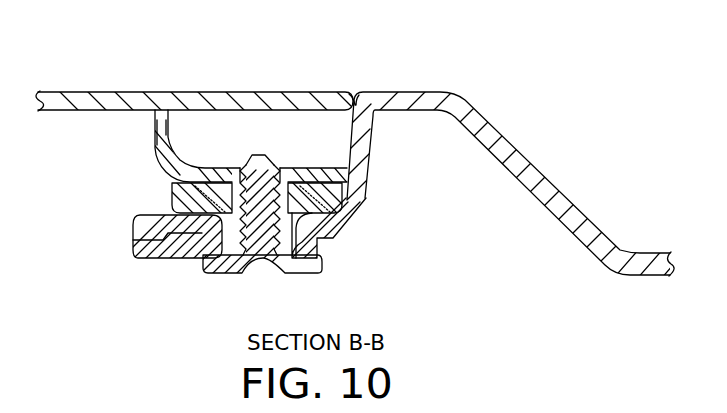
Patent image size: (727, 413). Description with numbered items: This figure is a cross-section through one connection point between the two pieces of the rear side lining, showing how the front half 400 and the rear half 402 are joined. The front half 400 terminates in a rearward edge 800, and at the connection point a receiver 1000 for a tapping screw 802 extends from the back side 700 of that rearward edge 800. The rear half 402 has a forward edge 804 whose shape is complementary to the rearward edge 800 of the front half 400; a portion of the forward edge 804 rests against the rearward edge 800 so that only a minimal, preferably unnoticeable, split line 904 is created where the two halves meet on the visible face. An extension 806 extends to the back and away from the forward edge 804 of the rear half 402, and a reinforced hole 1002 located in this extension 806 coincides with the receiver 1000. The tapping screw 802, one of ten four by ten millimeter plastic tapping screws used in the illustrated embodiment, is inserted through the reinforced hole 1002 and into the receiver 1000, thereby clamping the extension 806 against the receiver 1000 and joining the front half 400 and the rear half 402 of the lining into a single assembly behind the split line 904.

The front half 400 is at (42, 92).
The rear half 402 is at (657, 252).
The back side 700 is at (58, 114).
The rearward edge 800 is at (272, 92).
The tapping screw 802 is at (240, 275).
The forward edge 804 is at (462, 98).
The extension 806 is at (358, 204).
The split line 904 is at (355, 91).
The receiver 1000 is at (166, 148).
The reinforced hole 1002 is at (230, 243).